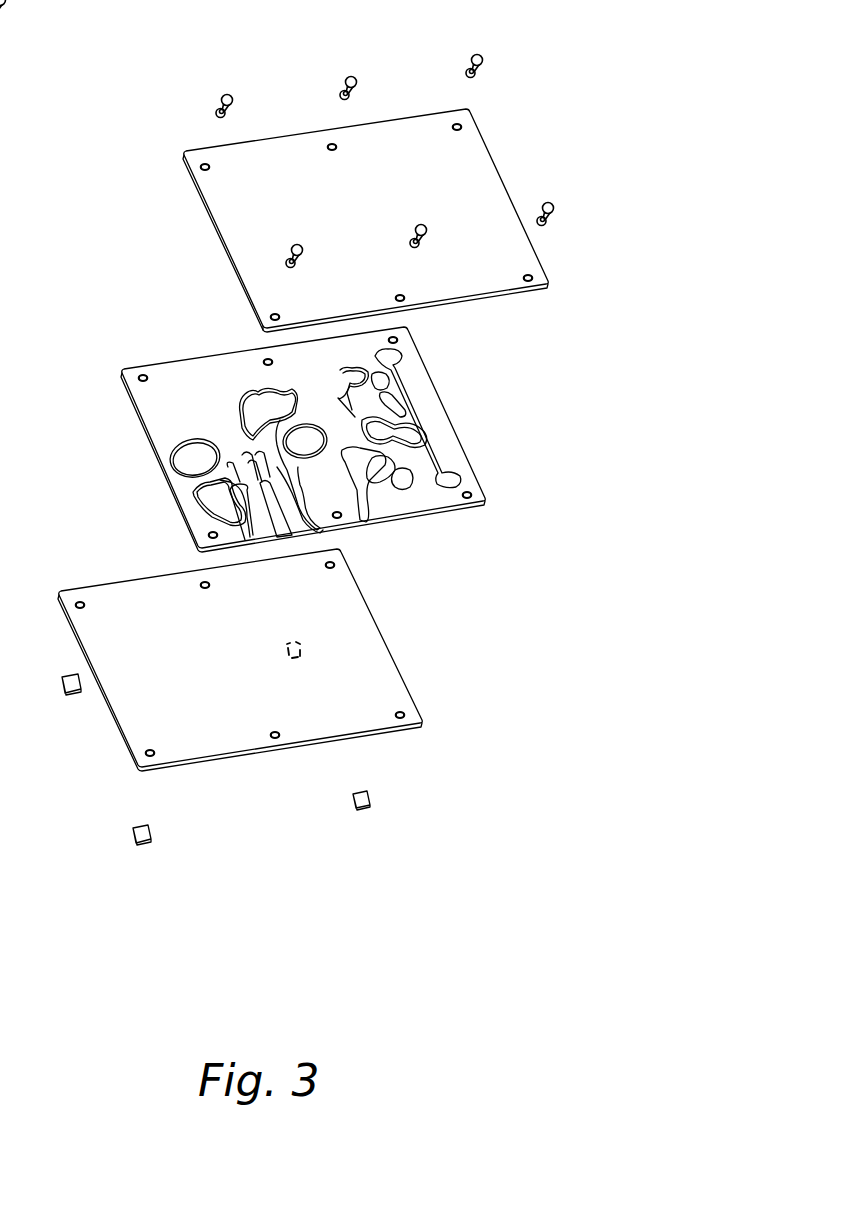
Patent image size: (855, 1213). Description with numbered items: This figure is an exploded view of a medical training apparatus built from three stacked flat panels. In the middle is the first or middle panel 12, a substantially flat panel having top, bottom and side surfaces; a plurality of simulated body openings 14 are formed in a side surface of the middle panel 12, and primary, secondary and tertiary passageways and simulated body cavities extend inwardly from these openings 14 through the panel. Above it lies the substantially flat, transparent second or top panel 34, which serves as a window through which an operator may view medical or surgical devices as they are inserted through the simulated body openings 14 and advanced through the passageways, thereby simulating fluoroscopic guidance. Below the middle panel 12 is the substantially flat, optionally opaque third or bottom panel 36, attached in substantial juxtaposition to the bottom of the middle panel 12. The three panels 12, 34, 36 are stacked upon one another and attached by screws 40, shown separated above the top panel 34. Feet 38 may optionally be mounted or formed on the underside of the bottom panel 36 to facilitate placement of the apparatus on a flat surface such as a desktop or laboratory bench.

The first or middle panel 12 is at (447, 430).
The simulated body openings 14 is at (267, 535).
The second or top panel 34 is at (470, 158).
The third or bottom panel 36 is at (380, 647).
The feet 38 is at (150, 833).
The screws 40 is at (357, 78).